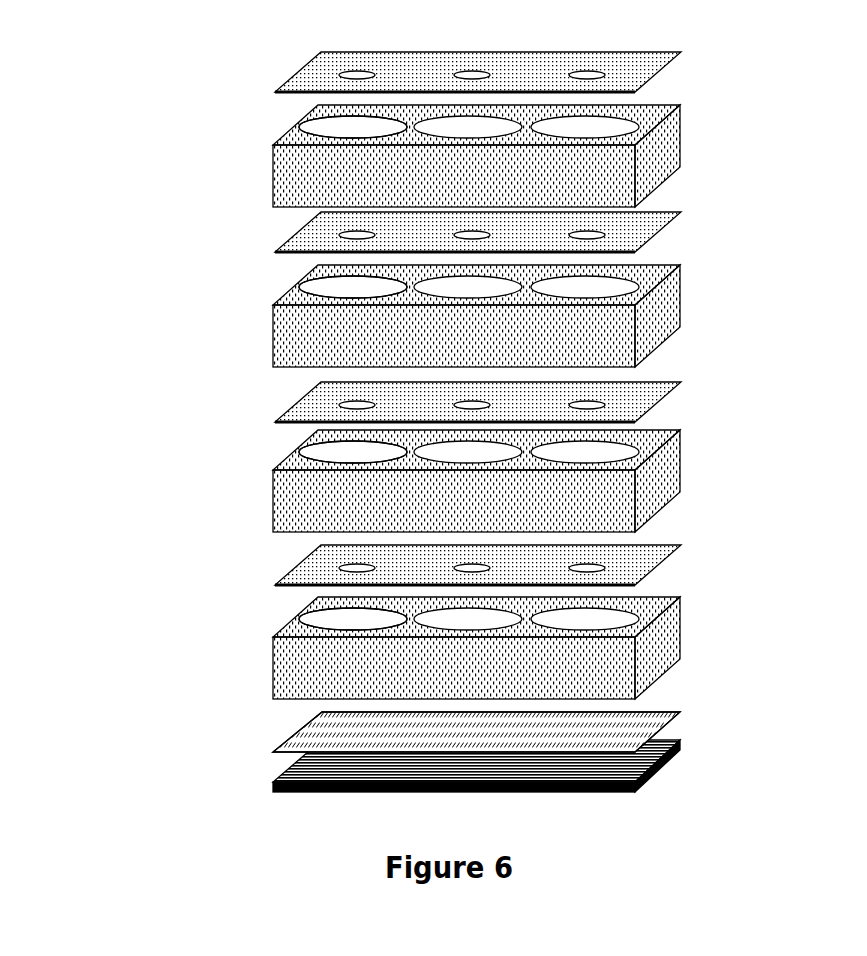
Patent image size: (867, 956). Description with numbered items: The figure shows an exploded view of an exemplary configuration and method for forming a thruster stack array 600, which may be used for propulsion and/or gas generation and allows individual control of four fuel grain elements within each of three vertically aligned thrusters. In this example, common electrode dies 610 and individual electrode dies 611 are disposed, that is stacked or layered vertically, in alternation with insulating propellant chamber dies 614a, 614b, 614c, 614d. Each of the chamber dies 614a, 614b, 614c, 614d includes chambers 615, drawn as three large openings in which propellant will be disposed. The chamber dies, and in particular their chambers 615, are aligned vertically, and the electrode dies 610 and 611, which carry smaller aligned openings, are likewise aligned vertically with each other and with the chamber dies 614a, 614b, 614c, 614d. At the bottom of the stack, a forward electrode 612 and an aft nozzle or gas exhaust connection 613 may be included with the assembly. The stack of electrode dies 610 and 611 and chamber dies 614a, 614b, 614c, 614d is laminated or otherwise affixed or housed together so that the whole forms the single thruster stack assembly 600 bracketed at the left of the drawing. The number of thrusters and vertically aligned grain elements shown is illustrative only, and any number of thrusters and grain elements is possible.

The thruster stack array 600 is at (197, 38).
The common electrode die 610 is at (653, 72).
The individual electrode die 611 is at (652, 215).
The forward electrode 612 is at (655, 723).
The aft nozzle or gas exhaust connection 613 is at (675, 757).
The insulating propellant chamber die 614a is at (682, 137).
The insulating propellant chamber die 614b is at (668, 307).
The insulating propellant chamber die 614c is at (680, 473).
The insulating propellant chamber die 614d is at (680, 632).
The chamber 615 is at (347, 128).